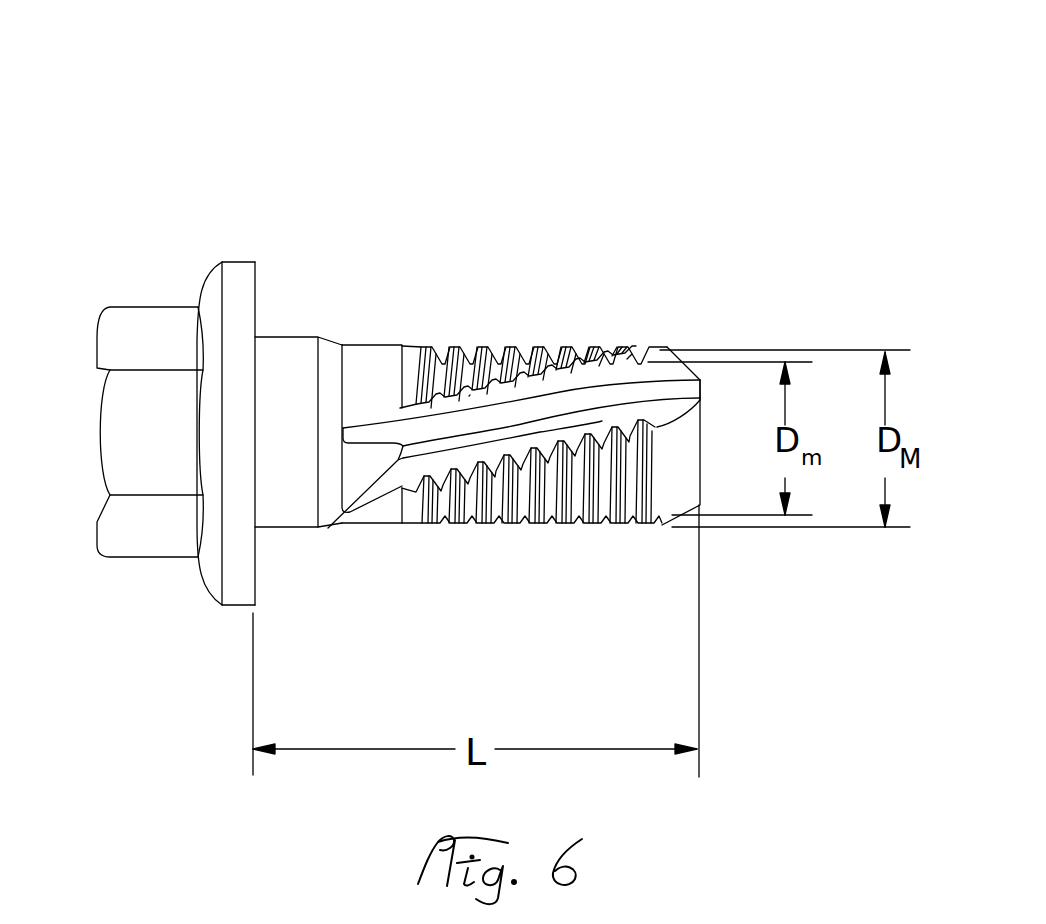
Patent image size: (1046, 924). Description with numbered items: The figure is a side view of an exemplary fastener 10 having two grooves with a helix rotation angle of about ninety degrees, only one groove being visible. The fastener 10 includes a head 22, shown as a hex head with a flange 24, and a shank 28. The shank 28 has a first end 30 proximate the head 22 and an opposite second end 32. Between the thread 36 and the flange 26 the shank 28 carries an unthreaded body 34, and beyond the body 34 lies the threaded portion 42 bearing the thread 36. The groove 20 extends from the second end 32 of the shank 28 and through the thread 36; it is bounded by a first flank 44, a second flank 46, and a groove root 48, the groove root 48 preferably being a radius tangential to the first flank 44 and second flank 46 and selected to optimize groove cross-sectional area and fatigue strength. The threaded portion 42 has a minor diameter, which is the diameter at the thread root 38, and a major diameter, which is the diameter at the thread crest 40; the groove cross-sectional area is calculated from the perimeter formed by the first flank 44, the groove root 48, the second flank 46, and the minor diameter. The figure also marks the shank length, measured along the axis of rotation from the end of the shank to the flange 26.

The fastener 10 is at (501, 86).
The groove 20 is at (383, 455).
The head 22 is at (158, 305).
The flange 24 is at (243, 260).
The flange 26 is at (258, 293).
The shank 28 is at (432, 524).
The first end 30 is at (283, 528).
The second end 32 is at (683, 527).
The body 34 is at (287, 338).
The thread 36 is at (575, 347).
The thread root 38 is at (638, 347).
The thread crest 40 is at (537, 347).
The threaded portion 42 is at (440, 345).
The first flank 44 is at (487, 400).
The second flank 46 is at (522, 438).
The groove root 48 is at (678, 392).